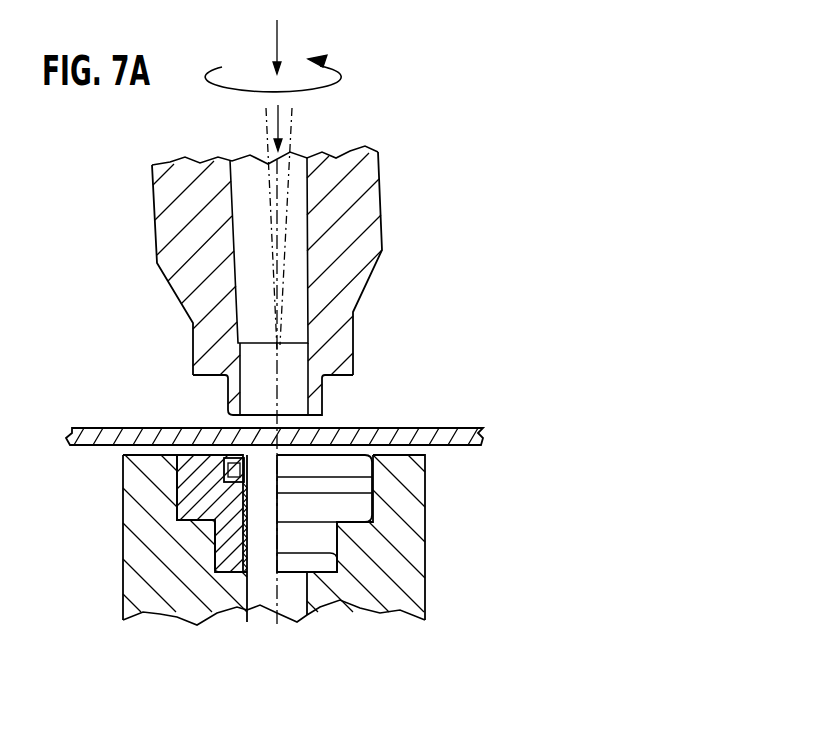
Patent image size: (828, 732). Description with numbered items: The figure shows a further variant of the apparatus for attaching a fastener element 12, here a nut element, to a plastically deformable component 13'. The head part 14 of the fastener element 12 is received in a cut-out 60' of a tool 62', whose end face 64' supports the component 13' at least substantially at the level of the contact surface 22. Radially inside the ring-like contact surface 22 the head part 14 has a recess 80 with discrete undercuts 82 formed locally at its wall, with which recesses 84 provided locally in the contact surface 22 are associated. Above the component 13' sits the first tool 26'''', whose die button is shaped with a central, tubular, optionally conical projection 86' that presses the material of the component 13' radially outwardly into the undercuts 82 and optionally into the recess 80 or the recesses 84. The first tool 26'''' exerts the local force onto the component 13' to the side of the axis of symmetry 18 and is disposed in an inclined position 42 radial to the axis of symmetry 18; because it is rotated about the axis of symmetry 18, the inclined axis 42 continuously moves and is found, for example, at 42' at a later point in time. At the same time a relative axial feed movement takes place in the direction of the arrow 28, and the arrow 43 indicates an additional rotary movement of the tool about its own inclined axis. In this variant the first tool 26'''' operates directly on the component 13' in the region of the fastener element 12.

The arrow 28 is at (277, 30).
The arrow 43 is at (343, 68).
The axis of symmetry 18 is at (266, 111).
The inclined axis 42 is at (232, 229).
The inclined axis at a later point in time 42' is at (321, 225).
The first tool 26'''' is at (311, 280).
The projection 86' is at (299, 379).
The component 13' is at (284, 404).
The end face 64' is at (140, 420).
The contact surface 22 is at (193, 431).
The recesses 84 is at (225, 467).
The undercuts 82 is at (212, 464).
The recess 80 is at (200, 505).
The head part 14 is at (128, 540).
The fastener element 12 is at (352, 490).
The cut-out 60' is at (392, 537).
The tool 62' is at (368, 573).